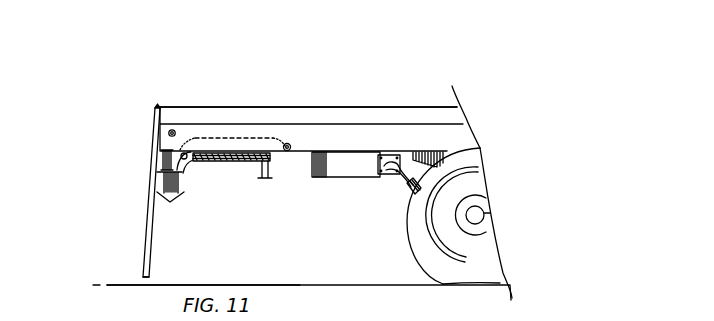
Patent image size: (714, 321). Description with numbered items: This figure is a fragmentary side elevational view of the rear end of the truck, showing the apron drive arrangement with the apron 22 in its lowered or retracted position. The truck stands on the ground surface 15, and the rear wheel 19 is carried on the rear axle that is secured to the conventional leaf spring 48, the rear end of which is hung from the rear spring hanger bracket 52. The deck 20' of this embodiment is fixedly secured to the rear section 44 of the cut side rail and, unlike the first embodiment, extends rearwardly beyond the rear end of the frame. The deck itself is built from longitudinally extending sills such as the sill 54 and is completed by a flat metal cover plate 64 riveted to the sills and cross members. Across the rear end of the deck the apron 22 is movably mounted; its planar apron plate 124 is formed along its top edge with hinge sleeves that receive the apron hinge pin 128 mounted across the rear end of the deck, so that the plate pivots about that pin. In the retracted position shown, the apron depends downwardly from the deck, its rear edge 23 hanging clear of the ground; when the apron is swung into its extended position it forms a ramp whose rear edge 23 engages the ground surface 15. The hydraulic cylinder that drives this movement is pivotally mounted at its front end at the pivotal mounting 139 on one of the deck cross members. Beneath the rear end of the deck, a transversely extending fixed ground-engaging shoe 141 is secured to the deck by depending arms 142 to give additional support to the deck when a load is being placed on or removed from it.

The ground surface 15 is at (117, 286).
The rear wheel 19 is at (460, 267).
The deck 20' is at (323, 68).
The apron 22 is at (132, 243).
The rear edge 23 is at (157, 277).
The rear section 44 is at (338, 167).
The leaf spring 48 is at (413, 193).
The spring hanger bracket 52 is at (383, 176).
The sill 54 is at (393, 138).
The cover plate 64 is at (207, 118).
The apron plate 124 is at (141, 162).
The apron hinge pin 128 is at (156, 109).
The pivotal mounting 139 is at (290, 158).
The ground-engaging shoe 141 is at (178, 207).
The depending arm 142 is at (180, 180).